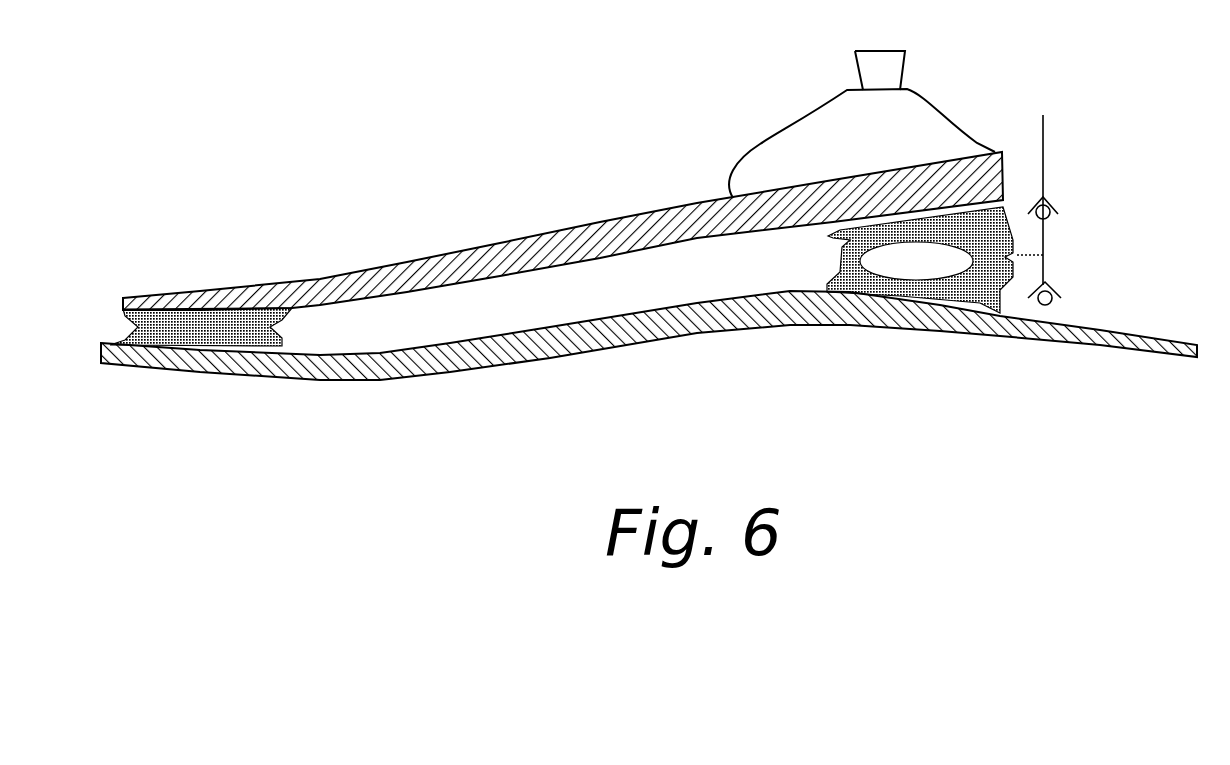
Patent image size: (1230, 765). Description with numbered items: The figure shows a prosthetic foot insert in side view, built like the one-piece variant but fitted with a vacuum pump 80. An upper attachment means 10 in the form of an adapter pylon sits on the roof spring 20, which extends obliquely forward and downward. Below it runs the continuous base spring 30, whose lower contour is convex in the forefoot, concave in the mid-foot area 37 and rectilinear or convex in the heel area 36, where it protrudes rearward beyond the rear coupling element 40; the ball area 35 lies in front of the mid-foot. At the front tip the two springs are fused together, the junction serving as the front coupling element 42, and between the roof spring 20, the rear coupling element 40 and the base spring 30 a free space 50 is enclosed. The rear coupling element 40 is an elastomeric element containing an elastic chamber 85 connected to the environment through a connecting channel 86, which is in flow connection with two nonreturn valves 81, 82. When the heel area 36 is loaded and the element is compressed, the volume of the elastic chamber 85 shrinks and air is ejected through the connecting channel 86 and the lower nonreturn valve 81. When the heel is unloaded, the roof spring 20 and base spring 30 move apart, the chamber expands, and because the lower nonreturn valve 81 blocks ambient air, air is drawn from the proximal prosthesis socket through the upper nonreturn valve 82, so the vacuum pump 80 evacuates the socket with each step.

The upper attachment means 10 is at (794, 141).
The roof spring 20 is at (472, 258).
The base spring 30 is at (529, 372).
The ball area 35 is at (387, 398).
The heel area 36 is at (1137, 405).
The mid-foot area 37 is at (762, 352).
The rear coupling element 40 is at (790, 263).
The front coupling element 42 is at (233, 307).
The free space 50 is at (590, 288).
The vacuum pump 80 is at (933, 250).
The lower nonreturn valve 81 is at (1052, 285).
The upper nonreturn valve 82 is at (1050, 198).
The elastic chamber 85 is at (905, 275).
The connecting channel 86 is at (985, 300).